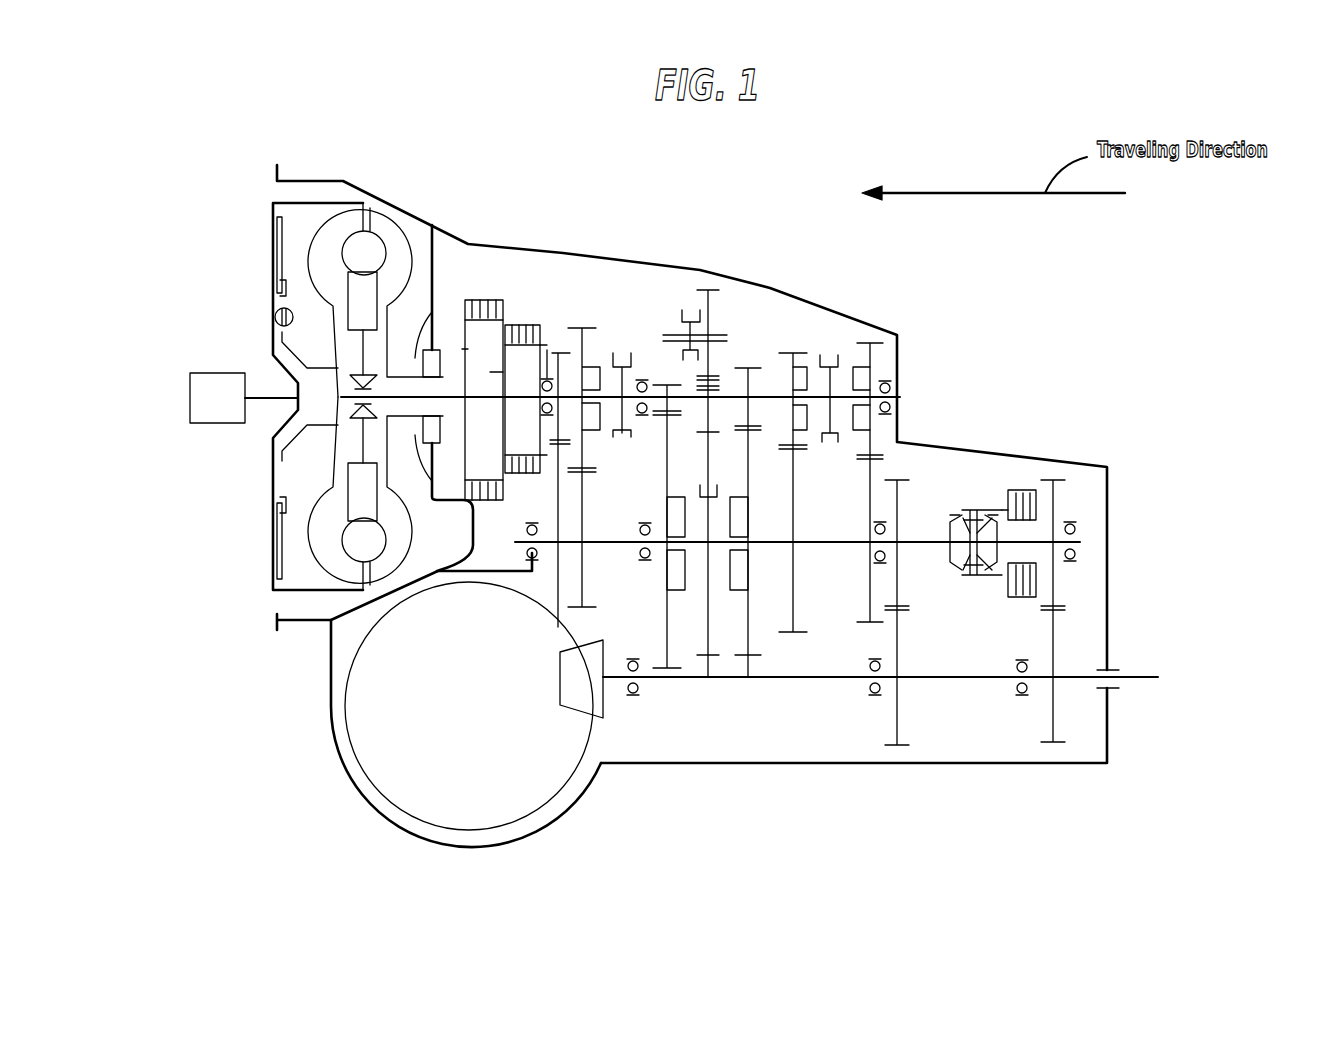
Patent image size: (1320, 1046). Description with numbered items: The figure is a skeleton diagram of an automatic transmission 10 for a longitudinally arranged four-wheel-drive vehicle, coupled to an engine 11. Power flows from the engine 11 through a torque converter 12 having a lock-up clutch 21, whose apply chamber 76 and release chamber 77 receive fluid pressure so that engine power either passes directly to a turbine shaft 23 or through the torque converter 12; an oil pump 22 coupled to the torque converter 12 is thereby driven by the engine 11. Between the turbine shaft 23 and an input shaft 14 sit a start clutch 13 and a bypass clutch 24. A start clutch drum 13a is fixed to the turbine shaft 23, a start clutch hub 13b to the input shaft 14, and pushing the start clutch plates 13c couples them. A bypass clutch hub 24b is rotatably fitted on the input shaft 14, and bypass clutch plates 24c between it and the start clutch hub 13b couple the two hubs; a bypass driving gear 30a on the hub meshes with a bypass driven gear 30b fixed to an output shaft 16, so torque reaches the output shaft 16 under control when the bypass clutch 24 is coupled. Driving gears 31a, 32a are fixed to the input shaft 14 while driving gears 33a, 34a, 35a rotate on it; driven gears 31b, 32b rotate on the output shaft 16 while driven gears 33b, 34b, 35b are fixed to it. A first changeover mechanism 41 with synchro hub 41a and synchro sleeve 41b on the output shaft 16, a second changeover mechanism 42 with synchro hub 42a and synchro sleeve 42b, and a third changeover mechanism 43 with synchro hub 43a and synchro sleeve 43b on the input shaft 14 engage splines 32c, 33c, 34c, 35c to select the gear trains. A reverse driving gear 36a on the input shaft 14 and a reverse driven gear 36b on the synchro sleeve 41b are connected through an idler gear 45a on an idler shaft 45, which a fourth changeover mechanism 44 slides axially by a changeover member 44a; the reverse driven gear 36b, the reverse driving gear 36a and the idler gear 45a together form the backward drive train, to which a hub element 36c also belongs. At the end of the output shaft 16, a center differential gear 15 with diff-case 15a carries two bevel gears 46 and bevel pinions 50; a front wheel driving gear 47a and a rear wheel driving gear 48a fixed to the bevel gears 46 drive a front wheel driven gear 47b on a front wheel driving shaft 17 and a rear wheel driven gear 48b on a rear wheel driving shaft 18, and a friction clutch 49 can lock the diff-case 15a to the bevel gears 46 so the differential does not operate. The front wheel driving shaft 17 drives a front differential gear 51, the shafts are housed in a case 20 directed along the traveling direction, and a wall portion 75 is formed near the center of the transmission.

The automatic transmission 10 is at (792, 202).
The engine 11 is at (190, 385).
The torque converter 12 is at (397, 200).
The start clutch 13 is at (475, 285).
The start clutch drum 13a is at (480, 347).
The start clutch hub 13b is at (483, 371).
The start clutch plates 13c is at (507, 312).
The input shaft 14 is at (900, 397).
The center differential gear 15 is at (938, 574).
The diff-case 15a is at (978, 507).
The output shaft 16 is at (828, 544).
The front wheel driving shaft 17 is at (828, 682).
The rear wheel driving shaft 18 is at (1151, 677).
The case 20 is at (760, 282).
The lock-up clutch 21 is at (276, 245).
The oil pump 22 is at (432, 352).
The turbine shaft 23 is at (341, 397).
The bypass clutch 24 is at (521, 317).
The bypass clutch hub 24b is at (541, 386).
The bypass clutch plates 24c is at (490, 450).
The bypass driving gear 30a is at (558, 352).
The bypass driven gear 30b is at (559, 624).
The first gear driving gear 31a is at (666, 384).
The first gear driven gear 31b is at (667, 674).
The second gear driving gear 32a is at (750, 367).
The second gear driven gear 32b is at (750, 680).
The spline 32c is at (743, 594).
The third gear driving gear 33a is at (793, 353).
The third gear driven gear 33b is at (794, 637).
The spline 33c is at (804, 432).
The fourth gear driving gear 34a is at (868, 343).
The fourth gear driven gear 34b is at (868, 622).
The spline 34c is at (853, 432).
The fifth gear driving gear 35a is at (582, 327).
The fifth gear driven gear 35b is at (596, 607).
The spline 35c is at (600, 434).
The reverse driving gear 36a is at (693, 469).
The reverse driven gear 36b is at (710, 680).
The reverse gear hub 36c is at (682, 497).
The first changeover mechanism 41 is at (718, 480).
The synchro hub 41a is at (726, 514).
The synchro sleeve 41b is at (710, 600).
The second changeover mechanism 42 is at (828, 349).
The synchro hub 42a is at (823, 385).
The synchro sleeve 42b is at (831, 442).
The third changeover mechanism 43 is at (622, 345).
The synchro hub 43a is at (630, 432).
The synchro sleeve 43b is at (622, 444).
The fourth changeover mechanism 44 is at (684, 296).
The changeover member 44a is at (686, 309).
The idler shaft 45 is at (716, 335).
The idler gear 45a is at (710, 289).
The bevel gears 46 is at (950, 570).
The front wheel driving gear 47a is at (897, 500).
The front wheel driven gear 47b is at (897, 716).
The rear wheel driving gear 48a is at (1053, 490).
The rear wheel driven gear 48b is at (1053, 718).
The friction clutch 49 is at (1012, 601).
The bevel pinions 50 is at (965, 519).
The front differential gear 51 is at (378, 741).
The wall portion 75 is at (552, 343).
The apply chamber 76 is at (298, 202).
The release chamber 77 is at (280, 294).